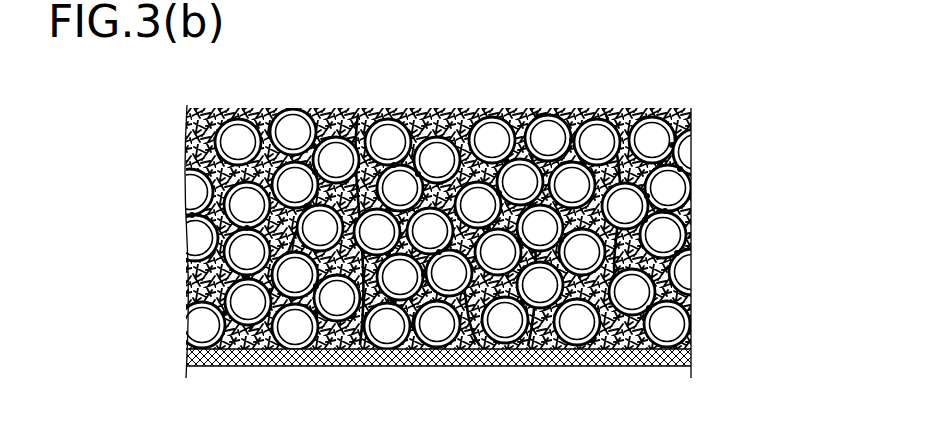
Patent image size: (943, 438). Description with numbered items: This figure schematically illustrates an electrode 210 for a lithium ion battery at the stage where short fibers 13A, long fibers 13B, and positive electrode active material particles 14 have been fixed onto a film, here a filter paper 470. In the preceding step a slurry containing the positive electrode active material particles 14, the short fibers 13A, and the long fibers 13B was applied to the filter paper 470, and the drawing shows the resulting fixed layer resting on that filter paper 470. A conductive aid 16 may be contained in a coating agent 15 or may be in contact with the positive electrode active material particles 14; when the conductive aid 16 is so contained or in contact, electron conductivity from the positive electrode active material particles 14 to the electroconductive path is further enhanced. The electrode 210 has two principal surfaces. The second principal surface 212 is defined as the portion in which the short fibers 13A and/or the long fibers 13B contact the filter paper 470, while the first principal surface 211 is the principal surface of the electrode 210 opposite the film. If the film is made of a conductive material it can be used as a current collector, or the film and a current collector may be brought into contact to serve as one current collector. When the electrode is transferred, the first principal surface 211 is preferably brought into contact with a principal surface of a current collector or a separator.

The electrode 210 is at (481, 226).
The first principal surface 211 is at (443, 201).
The second principal surface 212 is at (290, 366).
The filter paper 470 is at (690, 360).
The short fibers 13A is at (383, 117).
The long fibers 13B is at (488, 142).
The positive electrode active material particles 14 is at (617, 124).
The coating agent 15 is at (570, 117).
The conductive aid 16 is at (603, 140).